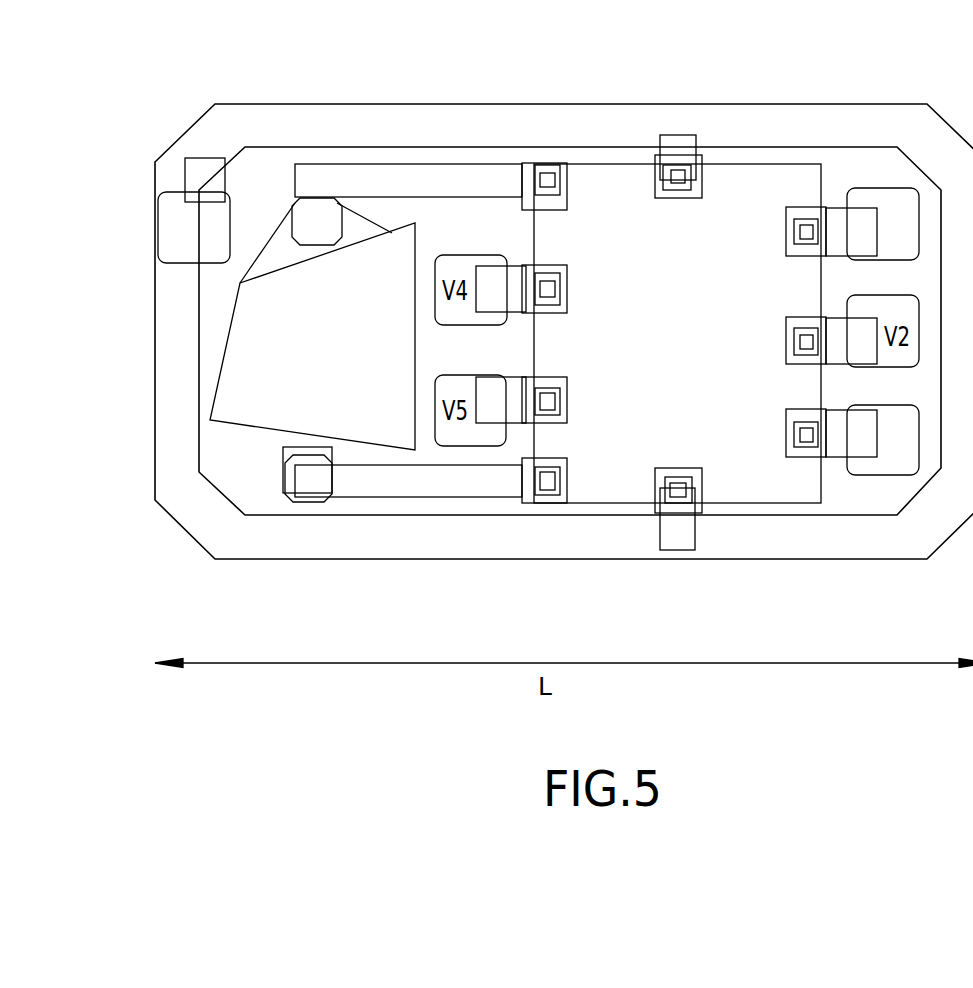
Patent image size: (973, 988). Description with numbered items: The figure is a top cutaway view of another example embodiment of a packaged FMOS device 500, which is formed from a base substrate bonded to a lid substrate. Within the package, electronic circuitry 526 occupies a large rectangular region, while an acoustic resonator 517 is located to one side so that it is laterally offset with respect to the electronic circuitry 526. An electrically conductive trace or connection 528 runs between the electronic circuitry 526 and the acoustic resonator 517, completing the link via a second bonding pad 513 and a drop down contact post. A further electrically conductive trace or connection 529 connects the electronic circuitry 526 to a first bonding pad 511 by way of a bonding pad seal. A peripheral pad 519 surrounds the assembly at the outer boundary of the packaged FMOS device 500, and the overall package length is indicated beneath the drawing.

The packaged FMOS device 500 is at (738, 57).
The first bonding pad 511 is at (877, 475).
The second bonding pad 513 is at (295, 202).
The acoustic resonator 517 is at (338, 358).
The peripheral pad 519 is at (503, 104).
The electronic circuitry 526 is at (663, 352).
The electrically conductive trace or connection 528 is at (407, 164).
The electrically conductive trace or connection 529 is at (829, 205).